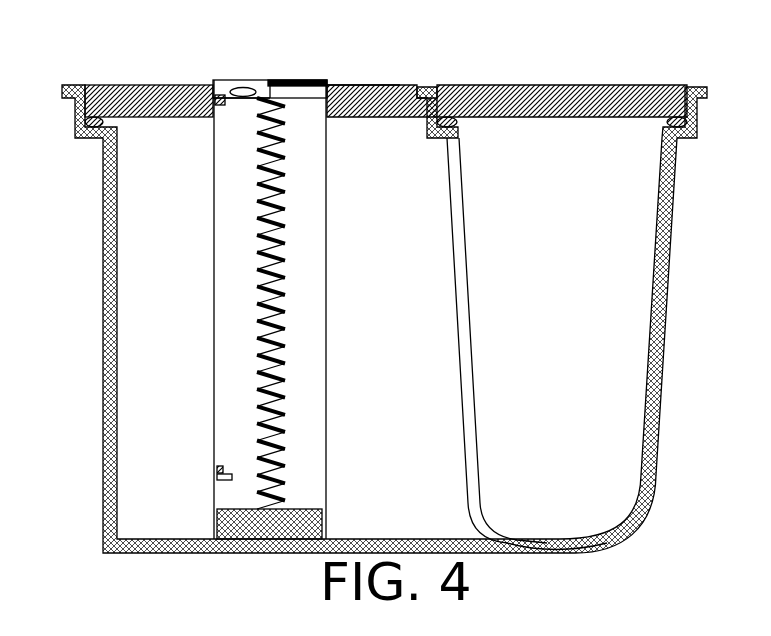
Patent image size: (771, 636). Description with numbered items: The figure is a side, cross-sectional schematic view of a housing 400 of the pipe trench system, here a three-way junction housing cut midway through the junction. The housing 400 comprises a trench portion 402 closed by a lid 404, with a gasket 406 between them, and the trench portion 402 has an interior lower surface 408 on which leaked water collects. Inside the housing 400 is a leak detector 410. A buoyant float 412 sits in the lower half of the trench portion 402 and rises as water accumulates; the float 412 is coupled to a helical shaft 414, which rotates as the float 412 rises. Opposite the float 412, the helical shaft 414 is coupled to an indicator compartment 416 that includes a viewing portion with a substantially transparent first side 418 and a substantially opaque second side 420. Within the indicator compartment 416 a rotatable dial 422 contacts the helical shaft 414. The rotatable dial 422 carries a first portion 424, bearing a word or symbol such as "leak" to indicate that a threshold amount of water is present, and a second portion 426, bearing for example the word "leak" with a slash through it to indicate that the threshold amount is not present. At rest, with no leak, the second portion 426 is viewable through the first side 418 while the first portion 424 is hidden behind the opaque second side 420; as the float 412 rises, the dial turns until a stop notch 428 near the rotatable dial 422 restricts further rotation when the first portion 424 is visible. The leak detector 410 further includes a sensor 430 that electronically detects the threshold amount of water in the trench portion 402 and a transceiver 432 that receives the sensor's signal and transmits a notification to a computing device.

The housing 400 is at (101, 56).
The trench portion 402 is at (103, 150).
The lid 404 is at (627, 85).
The gasket 406 is at (677, 137).
The interior lower surface 408 is at (560, 542).
The leak detector 410 is at (207, 321).
The float 412 is at (263, 522).
The helical shaft 414 is at (257, 353).
The indicator compartment 416 is at (212, 79).
The first side 418 is at (238, 80).
The second side 420 is at (302, 80).
The rotatable dial 422 is at (327, 87).
The first portion 424 is at (293, 98).
The second portion 426 is at (245, 98).
The stop notch 428 is at (223, 100).
The sensor 430 is at (217, 467).
The transceiver 432 is at (217, 478).